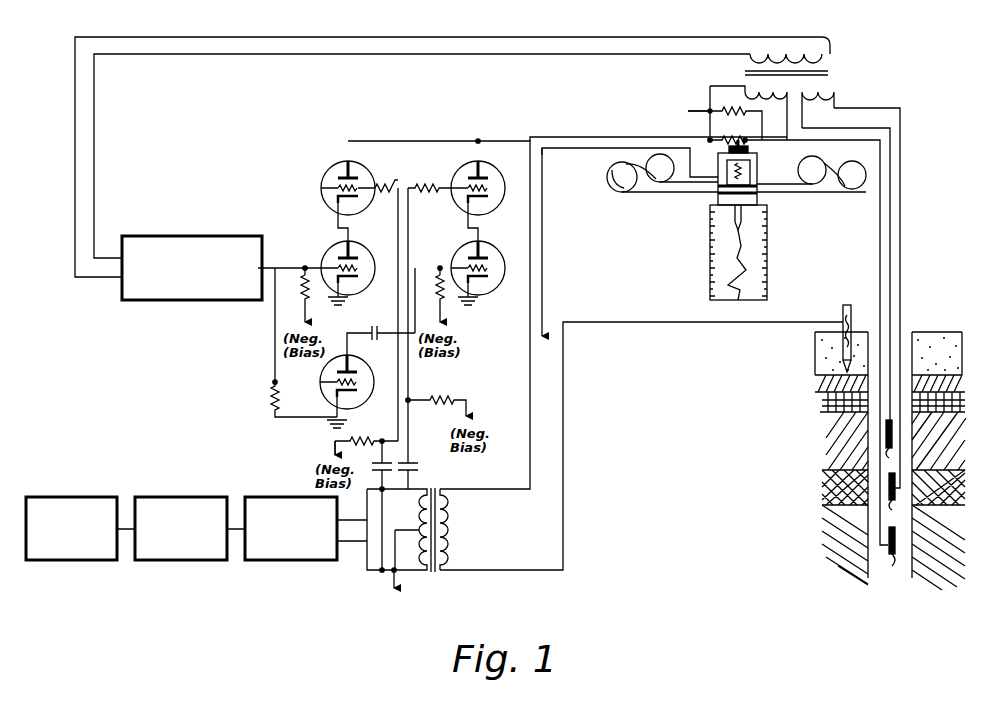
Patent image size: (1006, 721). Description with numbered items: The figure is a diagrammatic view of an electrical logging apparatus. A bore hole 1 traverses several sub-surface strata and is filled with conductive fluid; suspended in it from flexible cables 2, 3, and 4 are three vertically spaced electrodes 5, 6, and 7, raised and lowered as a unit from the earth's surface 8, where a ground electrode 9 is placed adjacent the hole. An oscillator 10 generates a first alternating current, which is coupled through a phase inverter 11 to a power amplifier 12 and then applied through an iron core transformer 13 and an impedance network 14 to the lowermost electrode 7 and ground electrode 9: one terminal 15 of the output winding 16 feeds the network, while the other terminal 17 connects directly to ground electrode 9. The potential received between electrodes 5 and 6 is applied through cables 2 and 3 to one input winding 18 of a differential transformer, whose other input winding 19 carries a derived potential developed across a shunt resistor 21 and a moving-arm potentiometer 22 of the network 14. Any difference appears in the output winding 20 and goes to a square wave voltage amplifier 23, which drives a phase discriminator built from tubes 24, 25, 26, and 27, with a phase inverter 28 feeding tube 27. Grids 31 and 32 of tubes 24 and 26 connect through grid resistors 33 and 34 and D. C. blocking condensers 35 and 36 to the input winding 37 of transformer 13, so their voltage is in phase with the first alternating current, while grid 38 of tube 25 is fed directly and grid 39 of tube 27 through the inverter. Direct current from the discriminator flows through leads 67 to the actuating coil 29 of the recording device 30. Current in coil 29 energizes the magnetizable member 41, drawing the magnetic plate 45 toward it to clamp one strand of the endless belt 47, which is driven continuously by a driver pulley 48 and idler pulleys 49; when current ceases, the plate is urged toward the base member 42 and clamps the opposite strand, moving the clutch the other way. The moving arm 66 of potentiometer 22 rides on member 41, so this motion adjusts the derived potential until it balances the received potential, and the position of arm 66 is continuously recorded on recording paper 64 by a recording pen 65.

The bore hole 1 is at (904, 334).
The flexible cable 2 is at (890, 132).
The flexible cable 3 is at (902, 254).
The flexible cable 4 is at (880, 254).
The potential electrode 5 is at (889, 458).
The potential electrode 6 is at (892, 508).
The lowermost electrode 7 is at (892, 564).
The earth's surface 8 is at (946, 332).
The ground electrode 9 is at (842, 306).
The oscillator 10 is at (76, 495).
The phase inverter 11 is at (176, 495).
The power amplifier 12 is at (272, 495).
The iron core transformer 13 is at (428, 490).
The impedance network 14 is at (698, 111).
The terminal of output winding 15 is at (488, 490).
The output winding 16 is at (449, 526).
The terminal of output winding 17 is at (493, 570).
The input winding 18 is at (836, 94).
The input winding 19 is at (740, 86).
The output winding 20 is at (830, 50).
The shunt resistor 21 is at (742, 110).
The moving-arm potentiometer 22 is at (742, 136).
The square wave voltage amplifier 23 is at (211, 232).
The tube 24 is at (324, 166).
The tube 25 is at (324, 252).
The tube 26 is at (465, 164).
The tube 27 is at (456, 252).
The phase inverter 28 is at (368, 406).
The actuating coil 29 is at (750, 172).
The recording device 30 is at (705, 220).
The grid 31 is at (360, 208).
The grid 32 is at (487, 202).
The grid resistor 33 is at (378, 186).
The grid resistor 34 is at (426, 186).
The D. C. blocking condenser 35 is at (372, 463).
The D. C. blocking condenser 36 is at (408, 466).
The input winding 37 is at (414, 570).
The grid 38 is at (356, 290).
The grid 39 is at (486, 290).
The magnetizable member 41 is at (754, 154).
The base member 42 is at (766, 198).
The magnetic plate 45 is at (716, 192).
The endless belt 47 is at (824, 192).
The driver pulley 48 is at (854, 170).
The idler pulley 49 is at (624, 162).
The recording paper 64 is at (712, 294).
The recording pen 65 is at (710, 238).
The moving arm 66 is at (783, 140).
The leads 67 is at (500, 138).